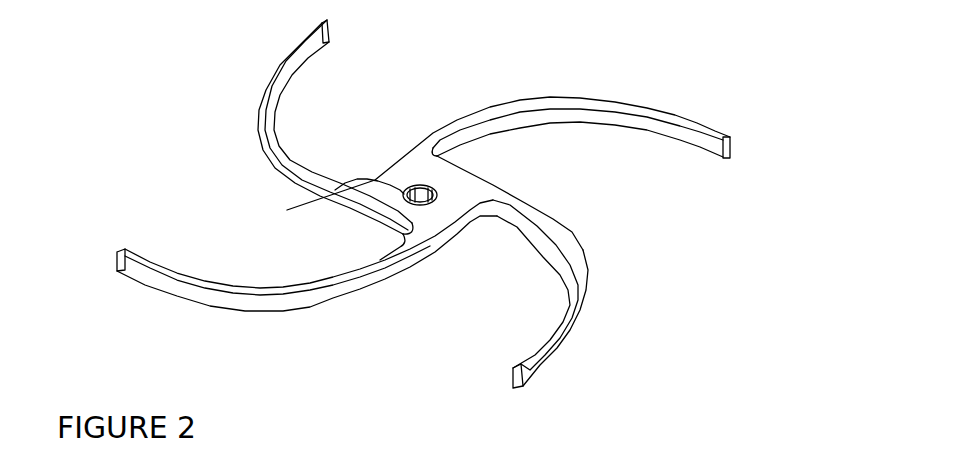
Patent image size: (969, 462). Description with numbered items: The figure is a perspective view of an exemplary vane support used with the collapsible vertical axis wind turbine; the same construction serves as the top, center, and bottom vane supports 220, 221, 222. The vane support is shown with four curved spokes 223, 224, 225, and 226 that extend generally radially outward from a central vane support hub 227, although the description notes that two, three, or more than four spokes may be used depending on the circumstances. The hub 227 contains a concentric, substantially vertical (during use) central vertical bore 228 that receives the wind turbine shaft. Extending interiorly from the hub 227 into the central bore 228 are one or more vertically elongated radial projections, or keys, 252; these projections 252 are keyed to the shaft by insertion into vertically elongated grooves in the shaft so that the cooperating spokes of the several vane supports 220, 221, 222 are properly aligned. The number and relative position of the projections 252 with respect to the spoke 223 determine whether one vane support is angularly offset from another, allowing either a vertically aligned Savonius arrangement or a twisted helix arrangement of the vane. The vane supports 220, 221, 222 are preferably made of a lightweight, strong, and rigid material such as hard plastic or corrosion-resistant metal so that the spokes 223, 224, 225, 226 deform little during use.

The vane support 220 is at (709, 370).
The vane support 221 is at (640, 380).
The vane support 222 is at (623, 357).
The spoke 223 is at (508, 134).
The spoke 224 is at (581, 294).
The spoke 225 is at (307, 279).
The spoke 226 is at (335, 140).
The vane support hub 227 is at (510, 238).
The central vertical bore 228 is at (324, 210).
The elongated projections (keys) 252 is at (424, 186).